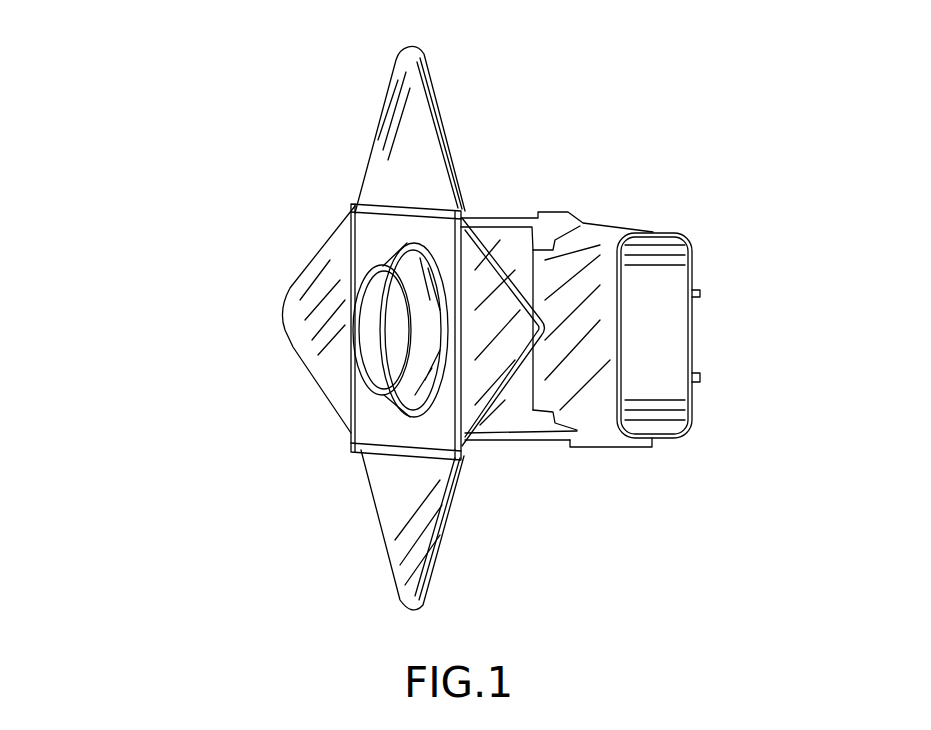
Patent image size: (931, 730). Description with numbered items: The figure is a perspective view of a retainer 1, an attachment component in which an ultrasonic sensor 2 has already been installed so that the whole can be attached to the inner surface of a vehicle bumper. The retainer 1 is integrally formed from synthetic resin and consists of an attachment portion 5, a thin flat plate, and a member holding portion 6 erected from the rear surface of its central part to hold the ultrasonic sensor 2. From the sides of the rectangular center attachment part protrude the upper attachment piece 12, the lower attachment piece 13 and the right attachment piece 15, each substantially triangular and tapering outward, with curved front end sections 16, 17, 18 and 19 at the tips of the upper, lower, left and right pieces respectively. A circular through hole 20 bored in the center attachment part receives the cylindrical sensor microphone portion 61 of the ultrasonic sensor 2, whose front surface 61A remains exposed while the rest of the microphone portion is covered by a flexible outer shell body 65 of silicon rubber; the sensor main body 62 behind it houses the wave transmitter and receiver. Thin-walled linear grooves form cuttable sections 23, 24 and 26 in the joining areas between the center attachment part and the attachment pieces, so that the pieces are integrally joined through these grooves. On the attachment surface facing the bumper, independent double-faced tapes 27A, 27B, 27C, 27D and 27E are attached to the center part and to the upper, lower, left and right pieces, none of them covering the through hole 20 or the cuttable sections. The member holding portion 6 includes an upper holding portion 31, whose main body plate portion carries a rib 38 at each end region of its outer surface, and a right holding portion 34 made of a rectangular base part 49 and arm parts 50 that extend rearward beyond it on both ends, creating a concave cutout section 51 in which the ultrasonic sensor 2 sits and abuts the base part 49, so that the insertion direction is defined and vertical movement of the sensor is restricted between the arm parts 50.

The retainer 1 is at (240, 100).
The ultrasonic sensor 2 is at (681, 234).
The attachment portion 5 is at (440, 90).
The member holding portion 6 is at (668, 226).
The upper attachment piece 12 is at (445, 120).
The lower attachment piece 13 is at (440, 575).
The right attachment piece 15 is at (510, 405).
The front end section 16 is at (408, 46).
The front end section 17 is at (402, 606).
The front end section 18 is at (282, 318).
The front end section 19 is at (525, 268).
The through hole 20 is at (352, 433).
The cuttable section 23 is at (470, 212).
The cuttable section 24 is at (468, 456).
The cuttable section 26 is at (472, 221).
The double-faced tape 27A is at (367, 225).
The double-faced tape 27B is at (430, 60).
The double-faced tape 27C is at (389, 520).
The double-faced tape 27D is at (299, 360).
The double-faced tape 27E is at (543, 214).
The upper holding portion 31 is at (530, 213).
The right holding portion 34 is at (545, 428).
The rib 38 is at (577, 214).
The base part 49 is at (523, 268).
The arm part 50 is at (648, 221).
The cutout section 51 is at (533, 256).
The sensor microphone portion 61 is at (370, 265).
The front surface 61A is at (370, 302).
The sensor main body 62 is at (607, 397).
The outer shell body 65 is at (385, 398).